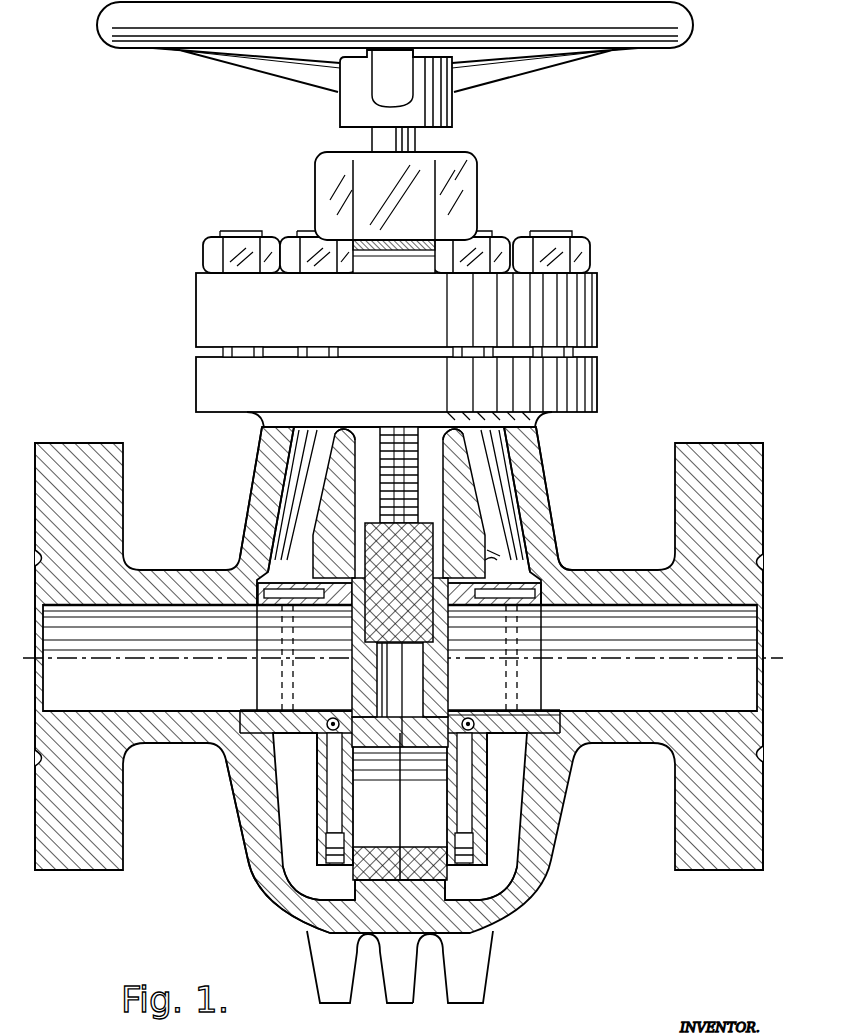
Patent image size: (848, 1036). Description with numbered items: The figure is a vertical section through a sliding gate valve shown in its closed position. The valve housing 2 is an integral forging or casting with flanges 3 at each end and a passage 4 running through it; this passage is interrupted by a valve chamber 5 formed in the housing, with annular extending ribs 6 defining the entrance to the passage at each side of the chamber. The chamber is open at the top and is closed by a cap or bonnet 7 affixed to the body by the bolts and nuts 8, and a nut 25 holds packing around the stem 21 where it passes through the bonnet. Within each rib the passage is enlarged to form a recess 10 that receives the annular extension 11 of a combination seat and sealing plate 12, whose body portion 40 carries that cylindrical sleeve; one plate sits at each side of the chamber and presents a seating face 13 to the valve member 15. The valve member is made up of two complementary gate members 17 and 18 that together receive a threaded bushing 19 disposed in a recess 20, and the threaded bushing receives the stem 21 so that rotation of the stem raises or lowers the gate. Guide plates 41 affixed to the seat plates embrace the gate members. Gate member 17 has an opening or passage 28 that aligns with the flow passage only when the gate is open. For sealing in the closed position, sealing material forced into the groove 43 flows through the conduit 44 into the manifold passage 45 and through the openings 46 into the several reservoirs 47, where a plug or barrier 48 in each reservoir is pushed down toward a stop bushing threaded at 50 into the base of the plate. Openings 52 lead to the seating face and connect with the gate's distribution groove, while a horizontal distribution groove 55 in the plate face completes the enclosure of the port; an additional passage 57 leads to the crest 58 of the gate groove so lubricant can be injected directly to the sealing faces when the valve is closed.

The valve housing 2 is at (186, 752).
The flanges 3 is at (72, 447).
The passage 4 is at (783, 686).
The valve chamber 5 is at (287, 505).
The annular extending ribs 6 is at (551, 521).
The cap or bonnet 7 is at (598, 293).
The bolts and nuts 8 is at (490, 238).
The recess 10 is at (566, 558).
The annular extension 11 is at (590, 573).
The combination seat and sealing plate 12 is at (318, 477).
The seating face 13 is at (351, 468).
The valve member 15 is at (483, 552).
The gate member 17 is at (362, 876).
The gate member 18 is at (427, 870).
The threaded bushing 19 is at (480, 548).
The recess 20 is at (395, 64).
The stem 21 is at (416, 142).
The nut 25 is at (469, 191).
The opening or passage 28 is at (356, 852).
The body portion 40 is at (537, 480).
The guide plates 41 is at (352, 540).
The groove 43 is at (300, 594).
The conduit 44 is at (247, 757).
The manifold passage 45 is at (504, 682).
The openings 46 is at (489, 782).
The reservoirs 47 is at (476, 818).
The plug or barrier 48 is at (478, 847).
The threaded connection 50 is at (470, 870).
The openings 52 is at (337, 717).
The horizontal distribution groove 55 is at (471, 718).
The additional passage 57 is at (312, 590).
The crest 58 is at (310, 616).